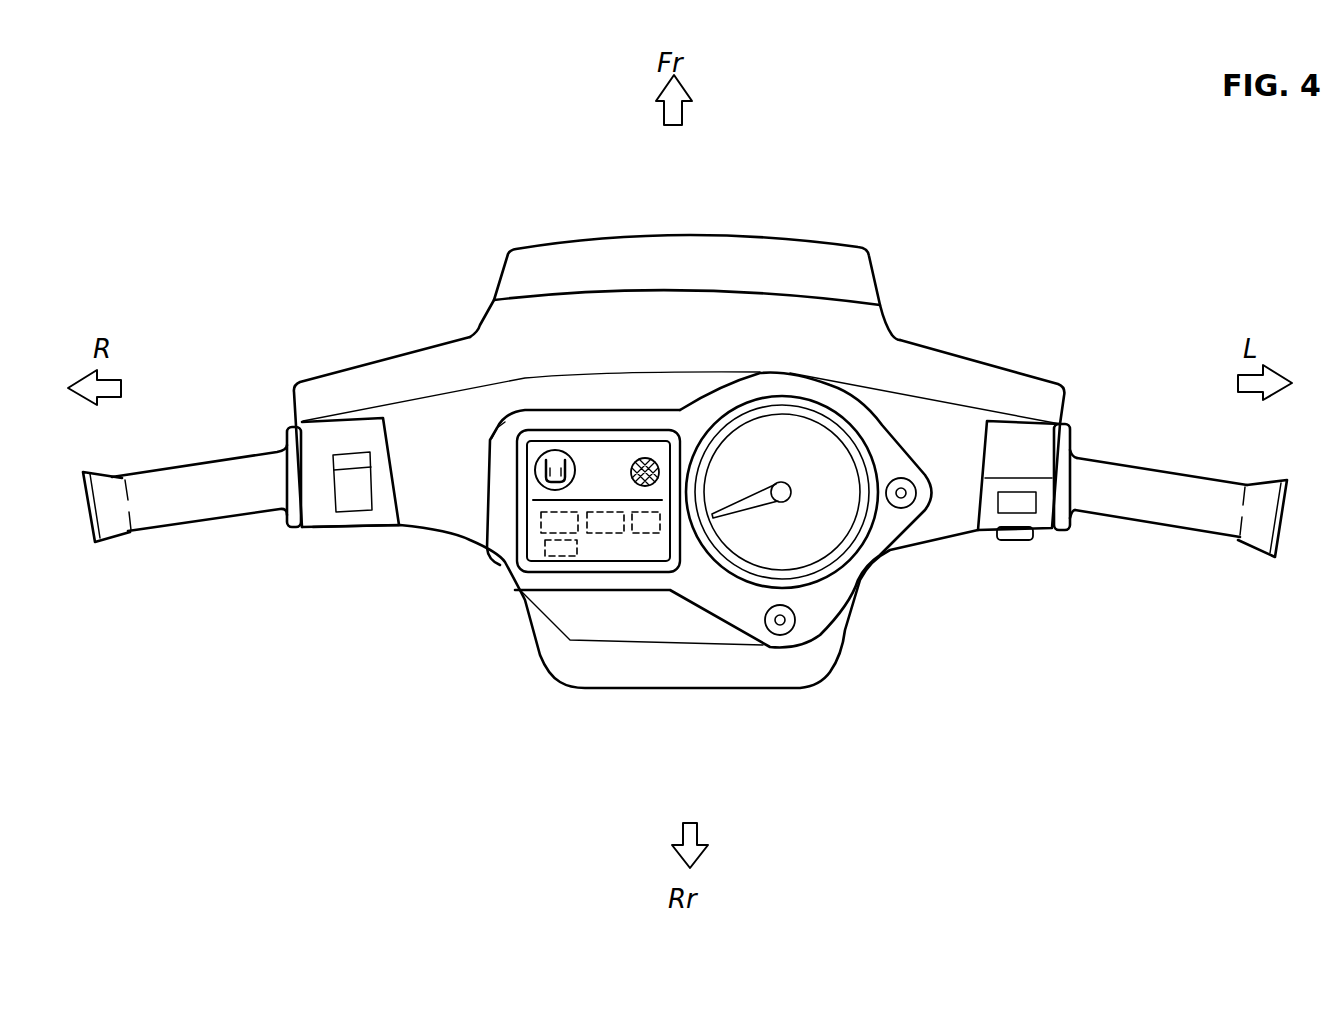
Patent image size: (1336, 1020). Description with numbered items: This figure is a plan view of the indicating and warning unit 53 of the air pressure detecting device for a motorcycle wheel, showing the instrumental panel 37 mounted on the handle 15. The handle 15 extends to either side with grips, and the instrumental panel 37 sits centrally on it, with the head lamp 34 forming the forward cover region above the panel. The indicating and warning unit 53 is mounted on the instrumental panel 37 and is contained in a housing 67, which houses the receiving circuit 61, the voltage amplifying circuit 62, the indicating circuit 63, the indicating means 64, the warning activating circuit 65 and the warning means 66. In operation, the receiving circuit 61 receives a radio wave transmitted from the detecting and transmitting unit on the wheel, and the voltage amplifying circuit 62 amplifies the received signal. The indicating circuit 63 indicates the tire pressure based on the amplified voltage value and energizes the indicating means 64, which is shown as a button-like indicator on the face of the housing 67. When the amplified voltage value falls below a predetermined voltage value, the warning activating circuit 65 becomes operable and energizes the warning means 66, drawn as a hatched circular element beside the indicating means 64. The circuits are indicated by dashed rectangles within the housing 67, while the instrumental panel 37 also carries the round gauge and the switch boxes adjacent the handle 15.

The handle 15 is at (1107, 458).
The head lamp 34 is at (785, 232).
The instrumental panel 37 is at (880, 415).
The indicating and warning unit 53 is at (593, 415).
The receiving circuit 61 is at (543, 523).
The voltage amplifying circuit 62 is at (603, 540).
The indicating circuit 63 is at (650, 540).
The indicating means 64 is at (563, 450).
The warning activating circuit 65 is at (550, 550).
The warning means 66 is at (648, 458).
The housing 67 is at (515, 462).